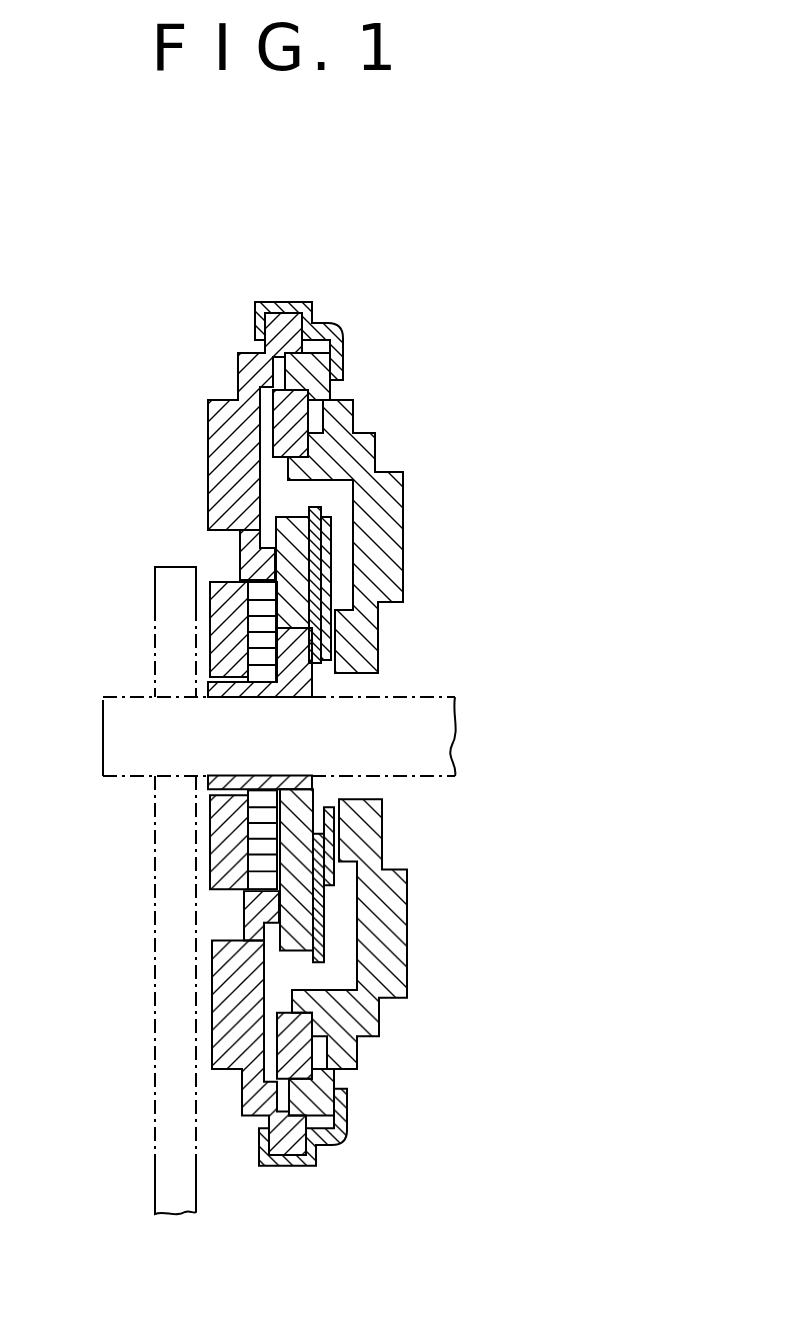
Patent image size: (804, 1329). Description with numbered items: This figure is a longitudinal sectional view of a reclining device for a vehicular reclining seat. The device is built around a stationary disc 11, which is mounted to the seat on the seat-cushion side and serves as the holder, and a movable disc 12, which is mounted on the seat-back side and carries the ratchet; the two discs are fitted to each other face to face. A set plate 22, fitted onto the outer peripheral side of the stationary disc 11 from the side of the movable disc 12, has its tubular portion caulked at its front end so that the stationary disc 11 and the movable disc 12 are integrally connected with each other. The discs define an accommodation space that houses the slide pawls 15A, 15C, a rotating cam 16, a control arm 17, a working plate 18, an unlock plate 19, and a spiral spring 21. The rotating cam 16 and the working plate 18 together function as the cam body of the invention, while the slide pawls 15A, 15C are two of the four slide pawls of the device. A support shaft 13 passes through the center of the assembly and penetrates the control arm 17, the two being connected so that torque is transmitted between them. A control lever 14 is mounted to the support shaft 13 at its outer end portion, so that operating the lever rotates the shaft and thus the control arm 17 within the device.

The stationary disc 11 is at (205, 418).
The movable disc 12 is at (400, 483).
The support shaft 13 is at (123, 747).
The control lever 14 is at (166, 1070).
The slide pawl 15A is at (313, 408).
The slide pawl 15C is at (321, 1056).
The rotating cam 16 is at (270, 525).
The control arm 17 is at (318, 672).
The working plate 18 is at (326, 933).
The unlock plate 19 is at (333, 568).
The spiral spring 21 is at (245, 637).
The set plate 22 is at (291, 298).